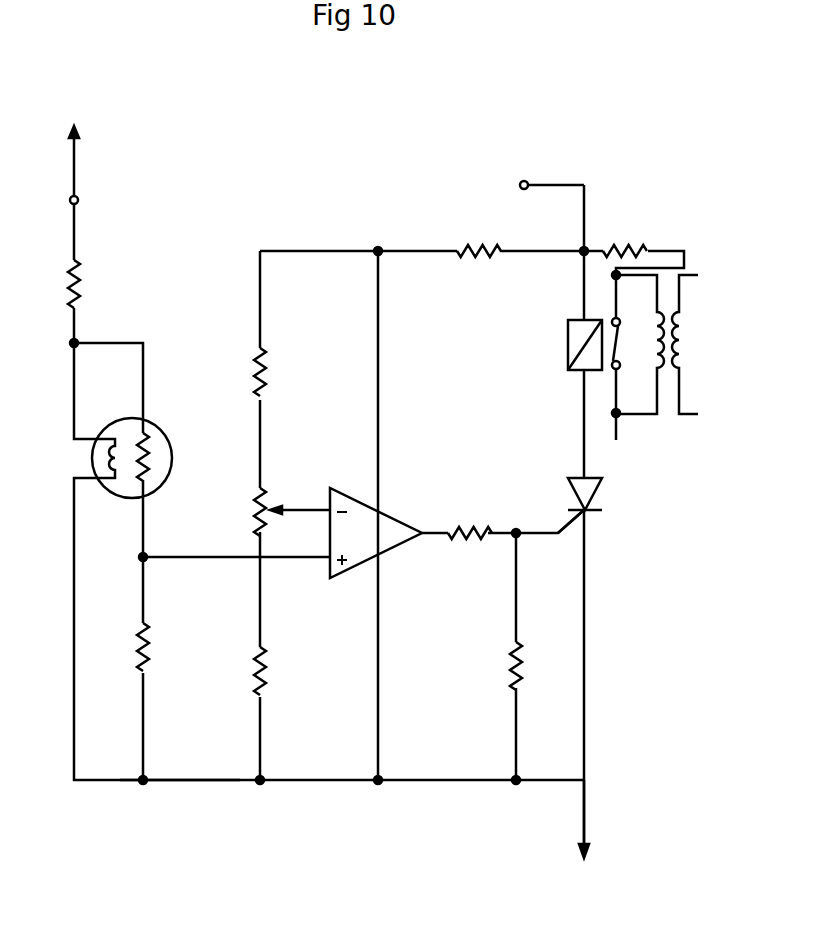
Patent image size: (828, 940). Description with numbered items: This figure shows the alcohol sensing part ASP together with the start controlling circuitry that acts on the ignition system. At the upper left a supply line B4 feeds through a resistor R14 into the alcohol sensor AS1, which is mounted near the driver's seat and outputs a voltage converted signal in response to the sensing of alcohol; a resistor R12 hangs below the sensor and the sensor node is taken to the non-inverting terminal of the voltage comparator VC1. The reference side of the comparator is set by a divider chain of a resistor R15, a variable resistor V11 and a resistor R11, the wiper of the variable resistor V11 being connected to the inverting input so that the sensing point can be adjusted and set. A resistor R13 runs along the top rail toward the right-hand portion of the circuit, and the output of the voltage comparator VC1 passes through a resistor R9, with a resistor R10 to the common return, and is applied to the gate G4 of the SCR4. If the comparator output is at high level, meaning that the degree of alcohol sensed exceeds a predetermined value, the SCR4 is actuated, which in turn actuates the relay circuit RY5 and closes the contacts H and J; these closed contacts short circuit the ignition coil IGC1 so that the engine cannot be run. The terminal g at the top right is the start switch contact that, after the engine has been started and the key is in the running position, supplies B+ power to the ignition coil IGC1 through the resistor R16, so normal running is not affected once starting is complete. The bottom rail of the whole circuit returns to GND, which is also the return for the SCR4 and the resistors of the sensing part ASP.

The battery supply terminal B4 is at (92, 128).
The resistor R14 is at (97, 284).
The alcohol sensor AS1 is at (172, 456).
The resistor R12 is at (163, 647).
The alcohol sensing part ASP is at (183, 781).
The resistor R15 is at (281, 372).
The variable resistor V11 is at (292, 504).
The voltage comparator VC1 is at (376, 533).
The resistor R11 is at (281, 671).
The resistor R13 is at (479, 239).
The contact g is at (550, 172).
The resistor R16 is at (625, 240).
The relay circuit RY5 is at (568, 336).
The contact H is at (625, 300).
The contact J is at (622, 383).
The ignition coil IGC1 is at (672, 412).
The SCR SCR4 is at (595, 490).
The gate G4 is at (568, 534).
The resistor R9 is at (470, 520).
The resistor R10 is at (535, 666).
The ground GND is at (582, 838).